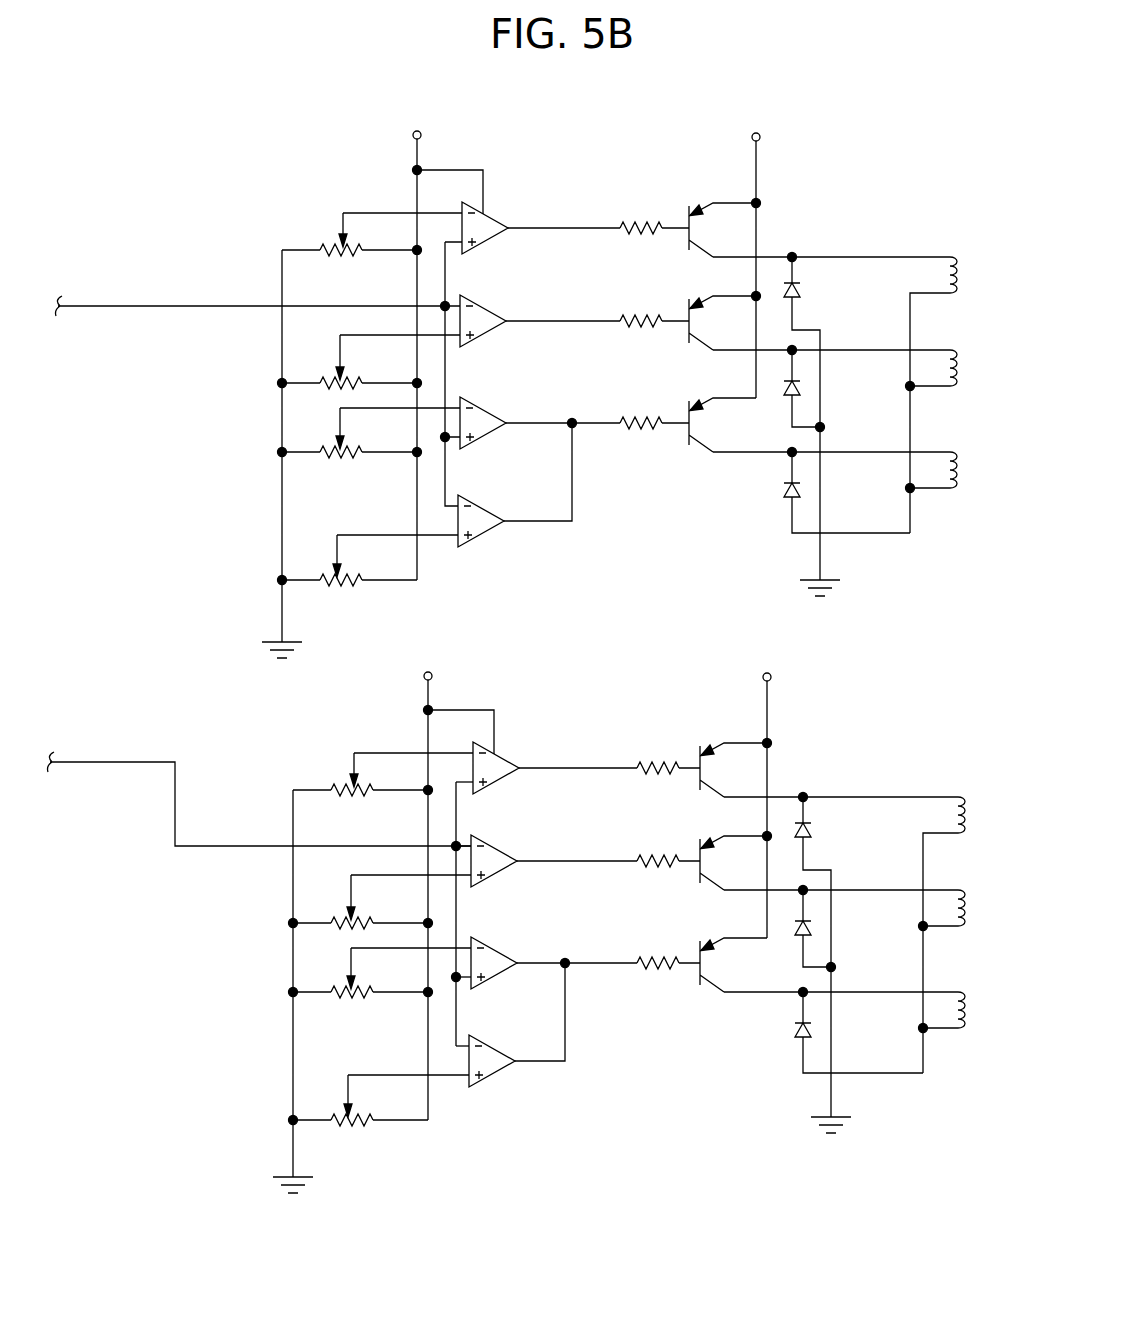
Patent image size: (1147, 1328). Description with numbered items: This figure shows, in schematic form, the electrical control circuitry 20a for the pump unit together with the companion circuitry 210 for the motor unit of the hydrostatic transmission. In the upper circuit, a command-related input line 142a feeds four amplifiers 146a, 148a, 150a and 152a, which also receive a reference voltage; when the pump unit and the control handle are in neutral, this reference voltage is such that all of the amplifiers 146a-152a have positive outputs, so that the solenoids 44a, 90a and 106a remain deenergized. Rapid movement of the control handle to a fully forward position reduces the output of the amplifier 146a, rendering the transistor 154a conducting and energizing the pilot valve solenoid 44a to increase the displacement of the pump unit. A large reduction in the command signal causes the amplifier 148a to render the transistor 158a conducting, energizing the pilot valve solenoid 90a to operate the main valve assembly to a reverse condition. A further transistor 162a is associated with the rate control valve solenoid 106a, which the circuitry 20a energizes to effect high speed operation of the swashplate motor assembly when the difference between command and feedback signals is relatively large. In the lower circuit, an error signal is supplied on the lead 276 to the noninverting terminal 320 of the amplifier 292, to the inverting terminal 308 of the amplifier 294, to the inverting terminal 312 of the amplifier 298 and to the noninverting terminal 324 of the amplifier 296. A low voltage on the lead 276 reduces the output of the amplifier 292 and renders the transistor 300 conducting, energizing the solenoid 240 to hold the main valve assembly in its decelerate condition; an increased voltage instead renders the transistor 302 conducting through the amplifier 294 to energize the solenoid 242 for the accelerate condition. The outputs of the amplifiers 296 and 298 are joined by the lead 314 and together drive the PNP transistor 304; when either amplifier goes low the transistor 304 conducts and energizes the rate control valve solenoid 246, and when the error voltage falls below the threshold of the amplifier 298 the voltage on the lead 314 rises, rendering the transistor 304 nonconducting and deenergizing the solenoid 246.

The electrical control circuitry 20a is at (905, 106).
The input signal line 142a is at (117, 305).
The amplifier 146a is at (492, 226).
The amplifier 148a is at (488, 312).
The amplifier 150a is at (483, 412).
The amplifier 152a is at (470, 508).
The transistor 154a is at (684, 206).
The transistor 158a is at (688, 302).
The transistor 162a is at (686, 402).
The pilot valve solenoid 44a is at (941, 272).
The pilot valve solenoid 90a is at (953, 372).
The rate control valve solenoid 106a is at (955, 488).
The drive circuit 210 is at (523, 920).
The lead 276 is at (260, 779).
The amplifier 292 is at (521, 757).
The amplifier 294 is at (518, 868).
The amplifier 296 is at (515, 951).
The amplifier 298 is at (498, 1077).
The transistor 300 is at (711, 752).
The transistor 302 is at (711, 846).
The PNP transistor 304 is at (713, 954).
The inverting terminal 308 is at (502, 844).
The inverting terminal 312 is at (496, 1031).
The lead 314 is at (573, 1012).
The noninverting terminal 320 is at (507, 792).
The noninverting terminal 324 is at (500, 987).
The solenoid 240 is at (974, 797).
The solenoid 242 is at (969, 891).
The rate control valve solenoid 246 is at (966, 995).